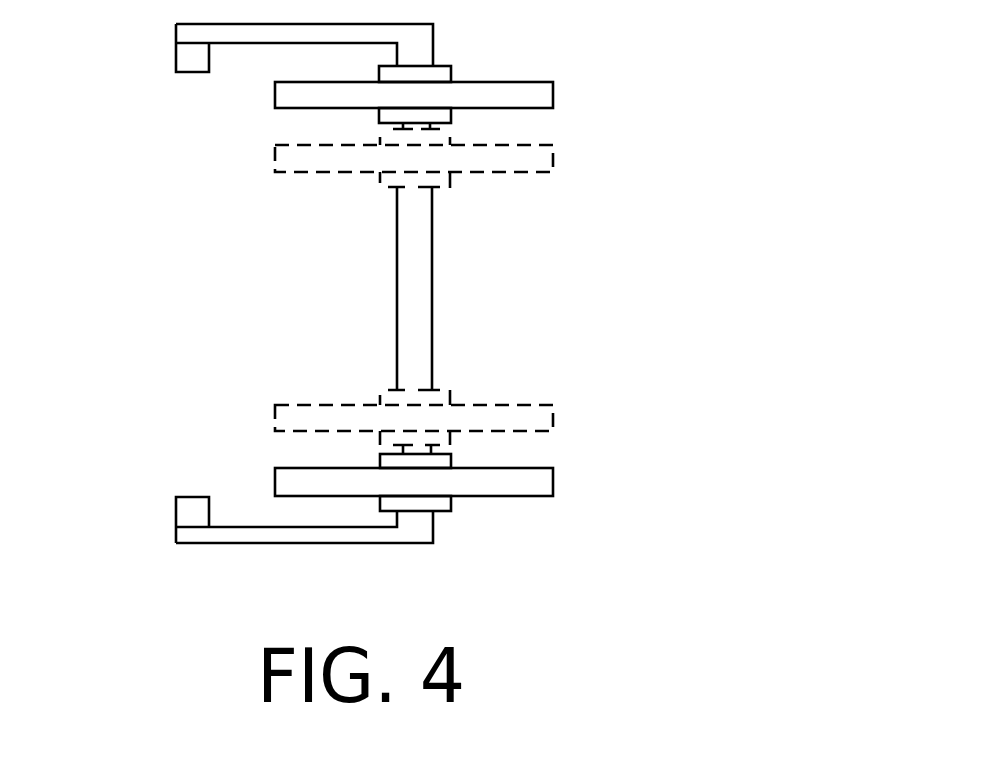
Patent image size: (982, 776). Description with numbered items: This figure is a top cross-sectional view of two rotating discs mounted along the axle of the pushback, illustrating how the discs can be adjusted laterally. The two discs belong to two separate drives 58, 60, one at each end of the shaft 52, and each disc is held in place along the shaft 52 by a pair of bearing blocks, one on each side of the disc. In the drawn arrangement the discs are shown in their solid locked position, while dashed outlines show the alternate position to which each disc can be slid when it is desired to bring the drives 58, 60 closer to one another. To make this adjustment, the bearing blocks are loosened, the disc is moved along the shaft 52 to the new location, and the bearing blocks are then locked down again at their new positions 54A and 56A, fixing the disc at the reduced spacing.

The shaft 52 is at (432, 290).
The position 54A is at (380, 138).
The position 56A is at (447, 187).
The drive 58 is at (742, 77).
The drive 60 is at (688, 450).